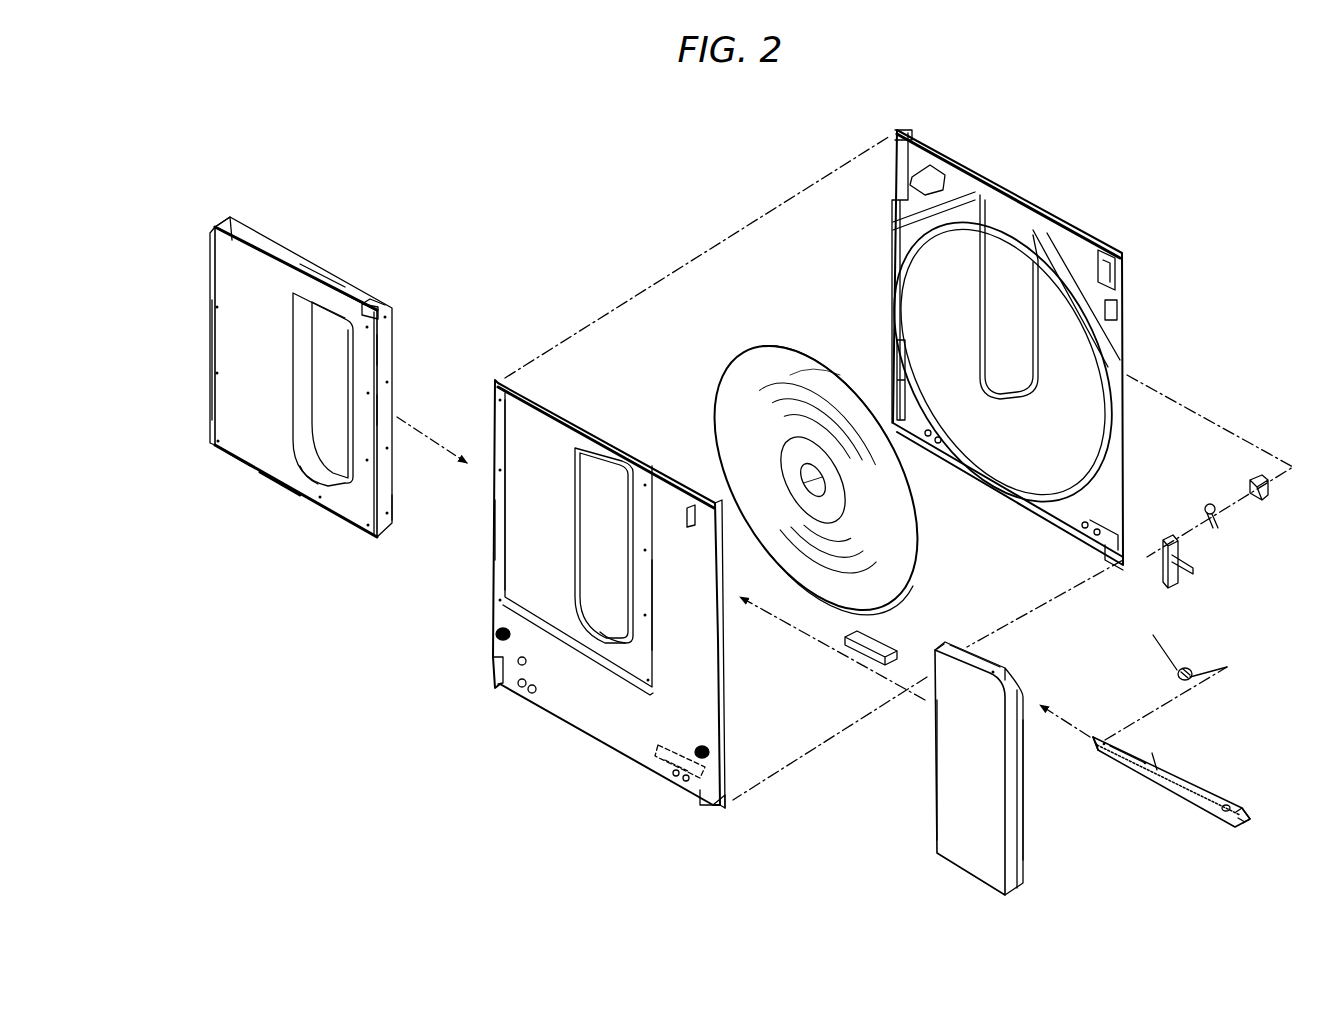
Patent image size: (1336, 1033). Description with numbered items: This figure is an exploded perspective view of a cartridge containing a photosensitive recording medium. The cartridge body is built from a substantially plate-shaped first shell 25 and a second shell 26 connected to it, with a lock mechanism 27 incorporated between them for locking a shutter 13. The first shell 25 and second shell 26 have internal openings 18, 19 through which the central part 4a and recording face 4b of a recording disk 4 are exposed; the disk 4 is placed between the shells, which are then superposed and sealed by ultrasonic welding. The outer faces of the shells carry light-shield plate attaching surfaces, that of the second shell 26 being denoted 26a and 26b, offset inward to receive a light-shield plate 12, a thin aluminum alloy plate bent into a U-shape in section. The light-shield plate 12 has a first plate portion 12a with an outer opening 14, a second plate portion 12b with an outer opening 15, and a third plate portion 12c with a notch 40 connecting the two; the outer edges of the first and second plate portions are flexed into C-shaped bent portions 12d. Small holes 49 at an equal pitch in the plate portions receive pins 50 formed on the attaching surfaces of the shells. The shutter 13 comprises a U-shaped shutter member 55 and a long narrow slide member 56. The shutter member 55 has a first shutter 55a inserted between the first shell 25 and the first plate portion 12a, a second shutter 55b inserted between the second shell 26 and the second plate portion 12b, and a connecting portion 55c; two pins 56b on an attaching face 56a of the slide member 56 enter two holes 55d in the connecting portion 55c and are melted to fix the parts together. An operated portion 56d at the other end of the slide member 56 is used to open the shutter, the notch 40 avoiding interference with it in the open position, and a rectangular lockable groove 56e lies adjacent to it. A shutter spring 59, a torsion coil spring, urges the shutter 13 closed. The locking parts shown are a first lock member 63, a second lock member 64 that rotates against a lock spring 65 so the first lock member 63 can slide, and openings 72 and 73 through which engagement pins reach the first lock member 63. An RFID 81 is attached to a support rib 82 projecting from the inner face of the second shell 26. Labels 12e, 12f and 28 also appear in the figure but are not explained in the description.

The recording disk 4 is at (740, 347).
The central part 4a is at (818, 512).
The recording face 4b is at (818, 390).
The light-shield plate 12 is at (262, 222).
The first plate portion 12a is at (387, 344).
The second plate portion 12b is at (370, 410).
The third plate portion 12c is at (313, 274).
The bent portions 12d is at (212, 400).
The upper end portion 12e is at (328, 278).
The corner portion 12f is at (230, 217).
The shutter 13 is at (983, 741).
The outer opening 14 is at (313, 332).
The outer opening 15 is at (312, 468).
The internal opening 18 is at (987, 271).
The internal opening 19 is at (607, 622).
The first shell 25 is at (960, 160).
The second shell 26 is at (574, 422).
The light-shield plate attaching surface 26a is at (652, 600).
The light-shield plate attaching surface 26b is at (512, 505).
The lock mechanism 27 is at (1212, 490).
The opening in rear panel 28 is at (585, 462).
The notch 40 is at (380, 303).
The small holes 49 is at (267, 474).
The pins 50 is at (497, 532).
The shutter member 55 is at (1036, 848).
The first shutter 55a is at (1020, 810).
The second shutter 55b is at (940, 776).
The connecting portion 55c is at (985, 660).
The holes 55d is at (950, 648).
The slide member 56 is at (1197, 777).
The attaching face 56a is at (1133, 757).
The pins 56b is at (1106, 740).
The operated portion 56d is at (1250, 816).
The lockable groove 56e is at (1225, 802).
The shutter spring 59 is at (1160, 650).
The first lock member 63 is at (1268, 490).
The second lock member 64 is at (1190, 575).
The lock spring 65 is at (1225, 525).
The opening 72 is at (1094, 250).
The opening 73 is at (683, 510).
The RFID 81 is at (863, 663).
The support rib 82 is at (660, 770).